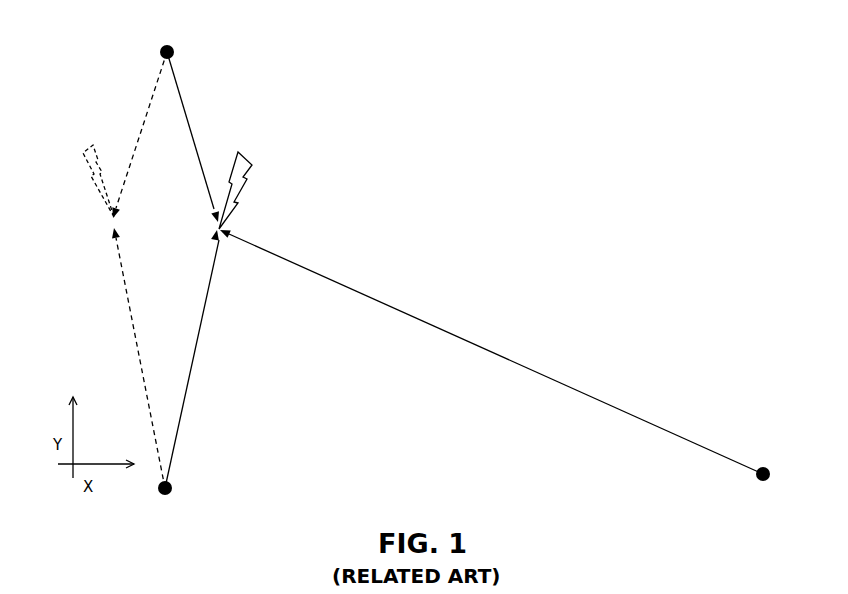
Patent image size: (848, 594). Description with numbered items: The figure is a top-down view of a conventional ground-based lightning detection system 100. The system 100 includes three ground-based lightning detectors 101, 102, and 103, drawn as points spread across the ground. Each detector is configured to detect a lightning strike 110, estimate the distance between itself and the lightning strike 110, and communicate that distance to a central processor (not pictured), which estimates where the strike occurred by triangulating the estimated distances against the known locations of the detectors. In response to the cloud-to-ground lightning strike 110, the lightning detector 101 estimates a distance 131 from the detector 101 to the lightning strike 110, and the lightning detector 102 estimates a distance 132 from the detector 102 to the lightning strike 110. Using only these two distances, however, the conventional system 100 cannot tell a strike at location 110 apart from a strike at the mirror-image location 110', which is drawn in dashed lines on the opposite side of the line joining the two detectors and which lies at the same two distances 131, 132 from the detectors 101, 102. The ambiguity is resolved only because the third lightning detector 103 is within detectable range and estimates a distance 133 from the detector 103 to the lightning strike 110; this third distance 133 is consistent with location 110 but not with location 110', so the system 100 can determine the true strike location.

The ground-based lightning detection system 100 is at (51, 43).
The ground-based lightning detector 101 is at (189, 54).
The ground-based lightning detector 102 is at (187, 488).
The ground-based lightning detector 103 is at (786, 477).
The lightning strike 110 is at (256, 190).
The lightning strike location 110' is at (80, 181).
The distance 131 is at (168, 137).
The distance 132 is at (168, 358).
The distance 133 is at (491, 352).